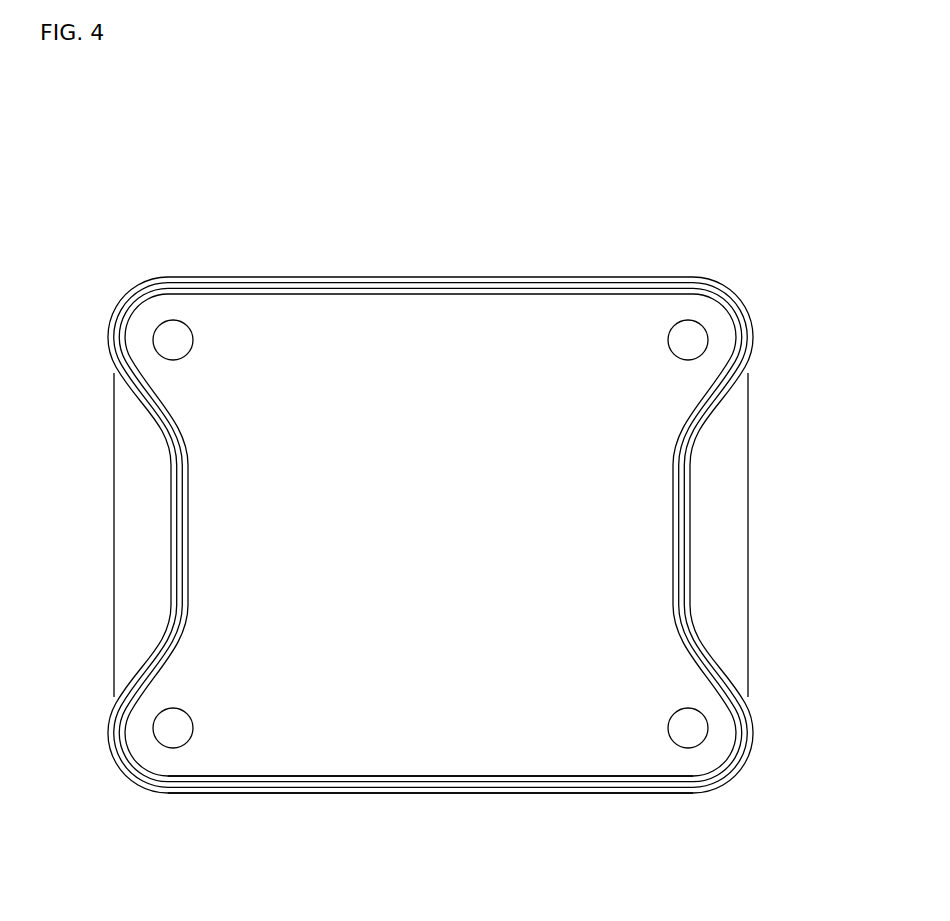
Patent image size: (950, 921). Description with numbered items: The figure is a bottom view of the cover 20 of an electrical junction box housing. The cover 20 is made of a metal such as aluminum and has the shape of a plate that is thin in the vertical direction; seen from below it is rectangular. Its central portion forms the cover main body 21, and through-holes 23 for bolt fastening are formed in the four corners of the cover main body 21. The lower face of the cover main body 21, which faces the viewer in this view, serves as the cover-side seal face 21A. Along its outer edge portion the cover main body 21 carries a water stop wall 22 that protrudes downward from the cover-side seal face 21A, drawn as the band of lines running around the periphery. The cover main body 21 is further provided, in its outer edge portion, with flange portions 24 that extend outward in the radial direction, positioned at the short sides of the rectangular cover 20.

The cover 20 is at (407, 208).
The cover main body 21 is at (560, 377).
The cover-side seal face 21A is at (430, 535).
The water stop wall 22 is at (525, 782).
The through-holes 23 is at (688, 331).
The flange portions 24 is at (718, 542).